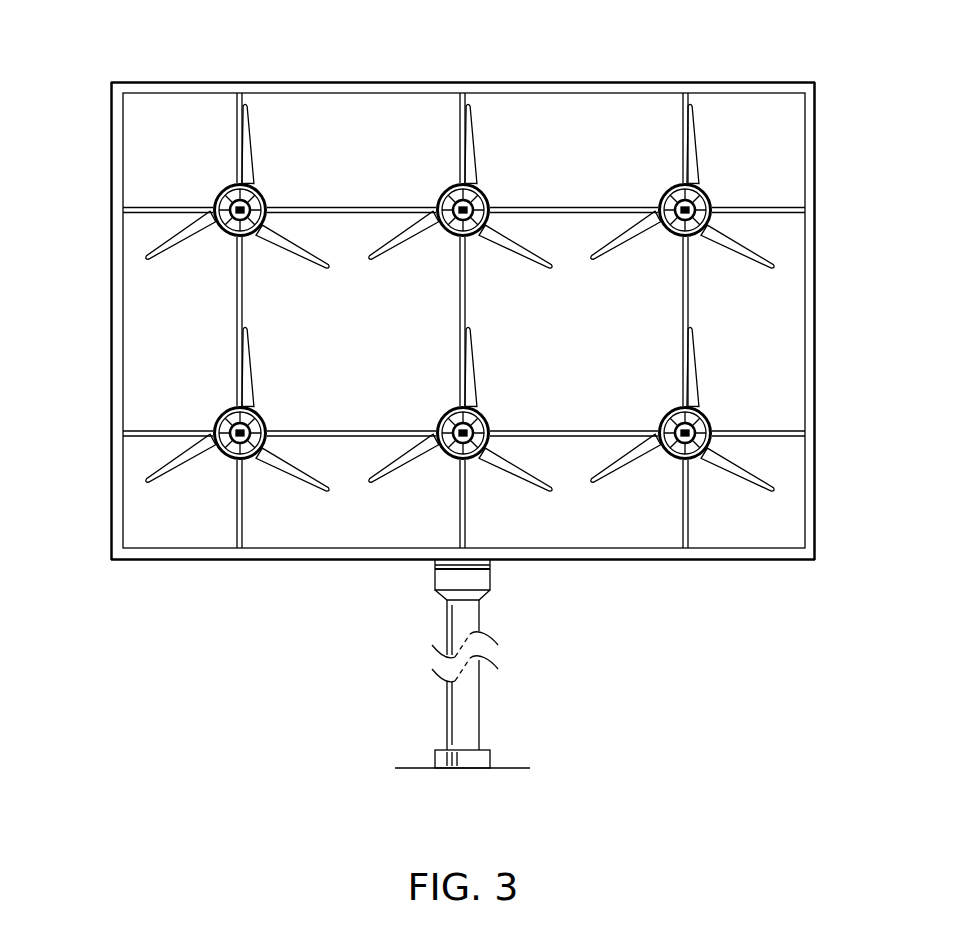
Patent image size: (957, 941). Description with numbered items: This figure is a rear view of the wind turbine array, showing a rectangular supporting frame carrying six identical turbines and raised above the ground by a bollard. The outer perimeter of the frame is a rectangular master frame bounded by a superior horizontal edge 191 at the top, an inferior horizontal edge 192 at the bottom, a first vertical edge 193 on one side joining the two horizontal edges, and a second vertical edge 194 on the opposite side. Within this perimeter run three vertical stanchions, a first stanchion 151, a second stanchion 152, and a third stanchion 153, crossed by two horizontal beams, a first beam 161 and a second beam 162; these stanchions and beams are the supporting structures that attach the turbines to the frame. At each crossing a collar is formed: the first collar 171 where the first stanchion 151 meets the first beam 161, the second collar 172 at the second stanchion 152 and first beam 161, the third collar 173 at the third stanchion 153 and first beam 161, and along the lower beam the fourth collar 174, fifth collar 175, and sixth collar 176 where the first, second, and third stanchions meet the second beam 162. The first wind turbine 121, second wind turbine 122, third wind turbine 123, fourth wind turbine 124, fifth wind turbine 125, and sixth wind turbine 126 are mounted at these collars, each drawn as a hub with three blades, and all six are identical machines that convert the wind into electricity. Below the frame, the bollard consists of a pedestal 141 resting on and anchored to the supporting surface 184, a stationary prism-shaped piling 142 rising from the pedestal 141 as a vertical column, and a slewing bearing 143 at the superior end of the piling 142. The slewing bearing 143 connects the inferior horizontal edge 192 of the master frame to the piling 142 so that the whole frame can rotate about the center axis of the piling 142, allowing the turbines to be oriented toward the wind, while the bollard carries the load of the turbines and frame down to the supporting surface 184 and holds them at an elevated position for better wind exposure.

The first wind turbine 121 is at (710, 177).
The second wind turbine 122 is at (487, 190).
The third wind turbine 123 is at (257, 189).
The fourth wind turbine 124 is at (702, 411).
The fifth wind turbine 125 is at (487, 413).
The sixth wind turbine 126 is at (260, 415).
The first collar 171 is at (670, 186).
The second collar 172 is at (448, 183).
The third collar 173 is at (228, 186).
The fourth collar 174 is at (668, 409).
The fifth collar 175 is at (446, 405).
The sixth collar 176 is at (219, 409).
The pedestal 141 is at (487, 757).
The piling 142 is at (467, 700).
The slewing bearing 143 is at (487, 585).
The first stanchion 151 is at (688, 288).
The second stanchion 152 is at (463, 280).
The third stanchion 153 is at (243, 293).
The first beam 161 is at (767, 211).
The second beam 162 is at (780, 438).
The supporting surface 184 is at (415, 767).
The superior horizontal edge 191 is at (611, 82).
The inferior horizontal edge 192 is at (688, 560).
The first vertical edge 193 is at (813, 360).
The second vertical edge 194 is at (112, 408).